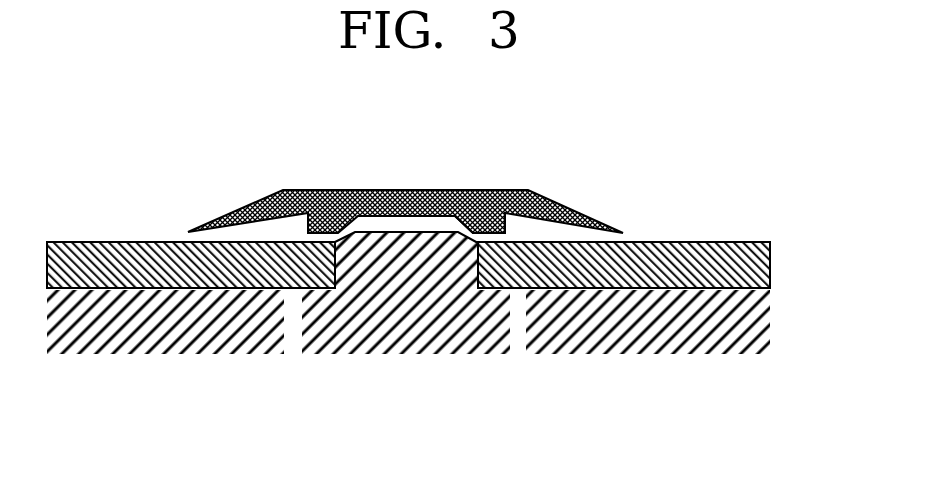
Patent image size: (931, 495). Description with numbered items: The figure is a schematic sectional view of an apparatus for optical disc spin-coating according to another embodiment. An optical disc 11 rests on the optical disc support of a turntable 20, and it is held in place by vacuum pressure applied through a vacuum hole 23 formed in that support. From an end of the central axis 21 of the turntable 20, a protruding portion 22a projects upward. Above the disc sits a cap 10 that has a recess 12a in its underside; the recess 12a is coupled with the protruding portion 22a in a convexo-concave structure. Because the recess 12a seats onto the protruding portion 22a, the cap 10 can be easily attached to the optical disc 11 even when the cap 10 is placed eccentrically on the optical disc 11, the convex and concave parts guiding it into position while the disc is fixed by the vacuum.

The cap 10 is at (370, 189).
The recess 12a is at (407, 207).
The central axis 21 is at (476, 231).
The turntable 20 is at (194, 315).
The protruding portion 22a is at (386, 242).
The vacuum hole 23 is at (515, 317).
The optical disc 11 is at (685, 267).